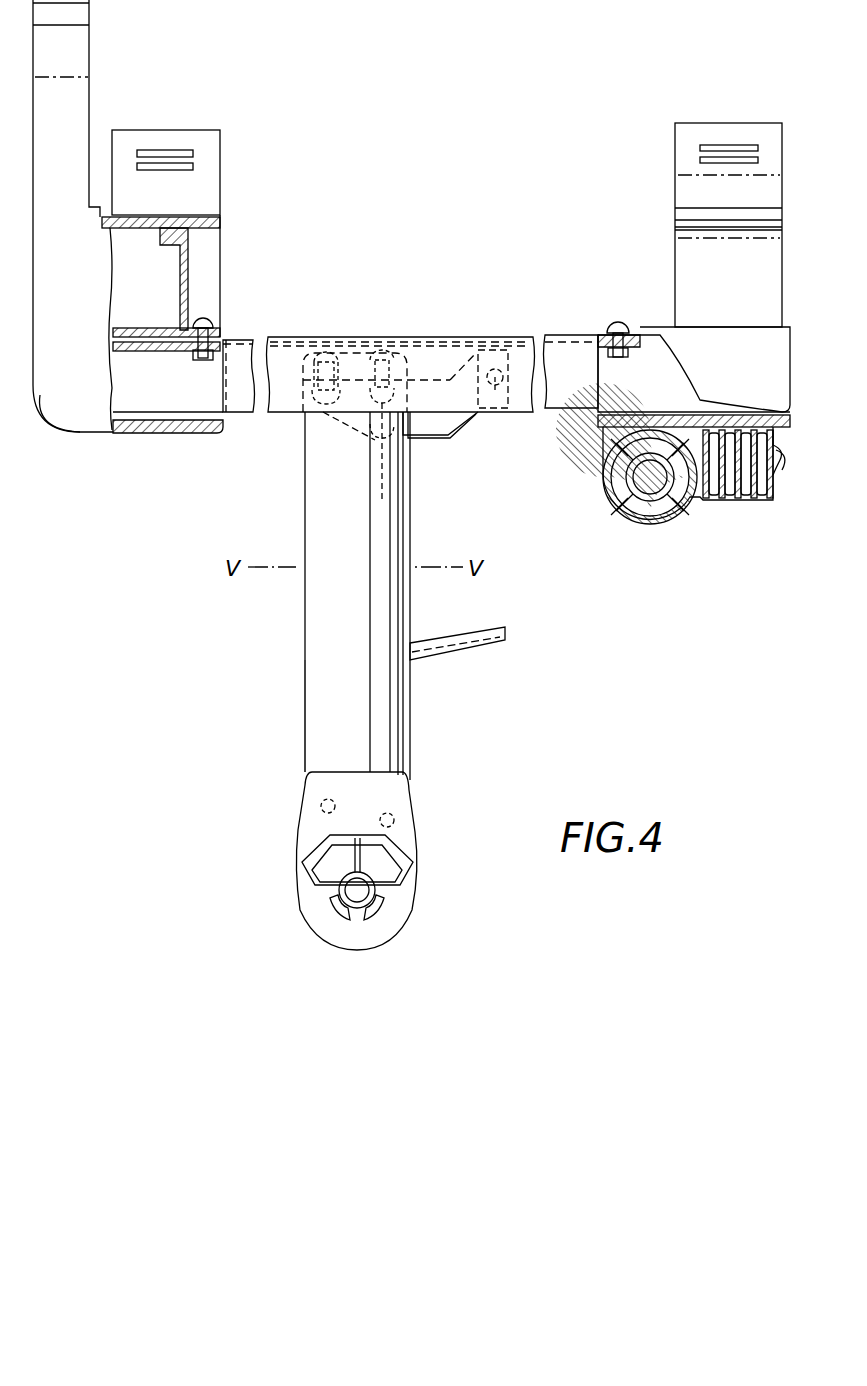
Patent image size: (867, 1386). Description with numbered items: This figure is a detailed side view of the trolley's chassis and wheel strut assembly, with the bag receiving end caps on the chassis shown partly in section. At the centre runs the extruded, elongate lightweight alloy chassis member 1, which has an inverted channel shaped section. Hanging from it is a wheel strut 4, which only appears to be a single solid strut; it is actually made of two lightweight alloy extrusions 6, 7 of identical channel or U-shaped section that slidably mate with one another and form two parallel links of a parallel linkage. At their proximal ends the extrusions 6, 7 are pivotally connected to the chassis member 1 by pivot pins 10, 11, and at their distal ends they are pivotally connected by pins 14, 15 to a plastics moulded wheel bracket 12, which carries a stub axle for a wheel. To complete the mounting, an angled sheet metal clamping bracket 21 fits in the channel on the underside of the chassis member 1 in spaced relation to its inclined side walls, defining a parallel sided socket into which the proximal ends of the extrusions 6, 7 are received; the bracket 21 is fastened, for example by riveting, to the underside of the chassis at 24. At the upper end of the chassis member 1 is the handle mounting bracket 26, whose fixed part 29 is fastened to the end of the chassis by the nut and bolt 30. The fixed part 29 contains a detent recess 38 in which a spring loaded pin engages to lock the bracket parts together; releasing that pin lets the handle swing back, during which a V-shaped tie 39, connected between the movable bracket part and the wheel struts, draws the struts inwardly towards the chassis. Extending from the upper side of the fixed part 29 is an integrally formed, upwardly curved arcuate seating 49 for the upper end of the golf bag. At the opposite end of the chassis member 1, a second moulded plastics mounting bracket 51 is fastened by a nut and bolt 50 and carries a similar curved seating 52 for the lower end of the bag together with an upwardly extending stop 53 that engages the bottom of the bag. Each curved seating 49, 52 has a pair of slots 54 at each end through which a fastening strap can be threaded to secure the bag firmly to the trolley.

The chassis member 1 is at (425, 335).
The wheel strut 4 is at (315, 620).
The extrusion 6 is at (400, 730).
The extrusion 7 is at (308, 728).
The pivot pin 10 is at (320, 352).
The pivot pin 11 is at (385, 352).
The wheel bracket 12 is at (410, 843).
The pin 14 is at (320, 806).
The pin 15 is at (395, 819).
The clamping bracket 21 is at (430, 436).
The fastening 24 is at (500, 395).
The handle mounting bracket 26 is at (731, 518).
The fixed part 29 is at (782, 338).
The nut and bolt 30 is at (615, 325).
The detent recess 38 is at (780, 460).
The V-shaped tie 39 is at (505, 630).
The arcuate seating 49 is at (690, 197).
The nut and bolt 50 is at (210, 322).
The mounting bracket 51 is at (76, 397).
The curved seating 52 is at (205, 200).
The stop 53 is at (88, 46).
The slots 54 is at (193, 153).